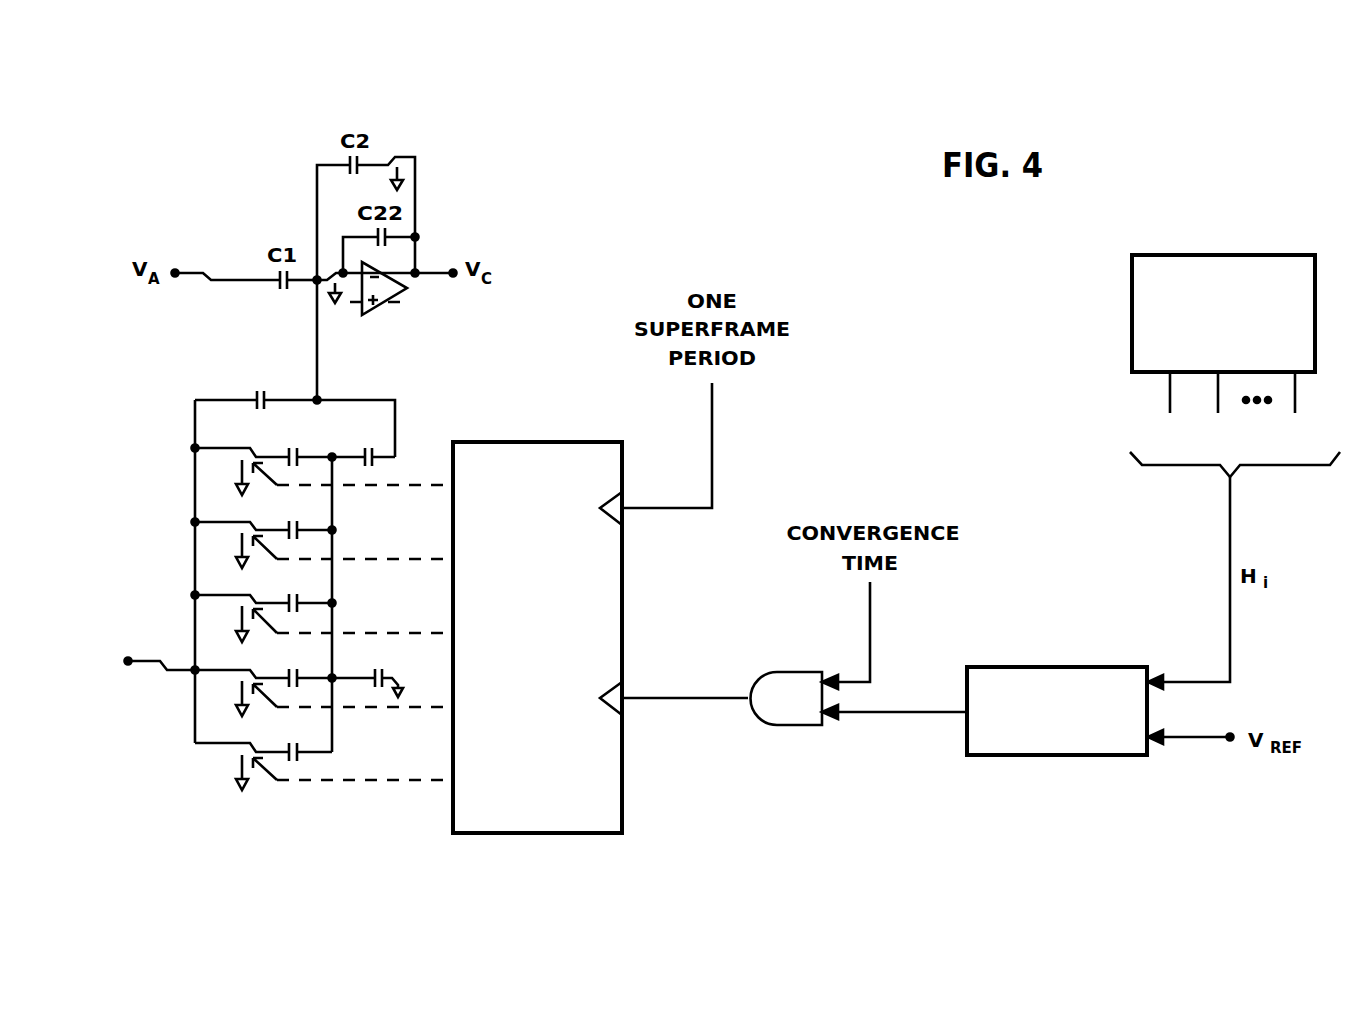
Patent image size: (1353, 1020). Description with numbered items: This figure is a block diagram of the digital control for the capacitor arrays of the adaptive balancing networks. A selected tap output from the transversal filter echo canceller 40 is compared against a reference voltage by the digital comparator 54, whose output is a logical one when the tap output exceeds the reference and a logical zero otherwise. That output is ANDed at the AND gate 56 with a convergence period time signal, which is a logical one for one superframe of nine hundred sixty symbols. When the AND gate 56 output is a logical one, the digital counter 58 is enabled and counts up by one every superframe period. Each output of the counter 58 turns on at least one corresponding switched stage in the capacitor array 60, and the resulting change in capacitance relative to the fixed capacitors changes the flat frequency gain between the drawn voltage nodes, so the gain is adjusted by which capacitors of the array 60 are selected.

The echo canceller 40 is at (1198, 255).
The digital comparator 54 is at (1030, 667).
The AND gate 56 is at (782, 670).
The digital counter 58 is at (522, 442).
The capacitor array 60 is at (153, 402).